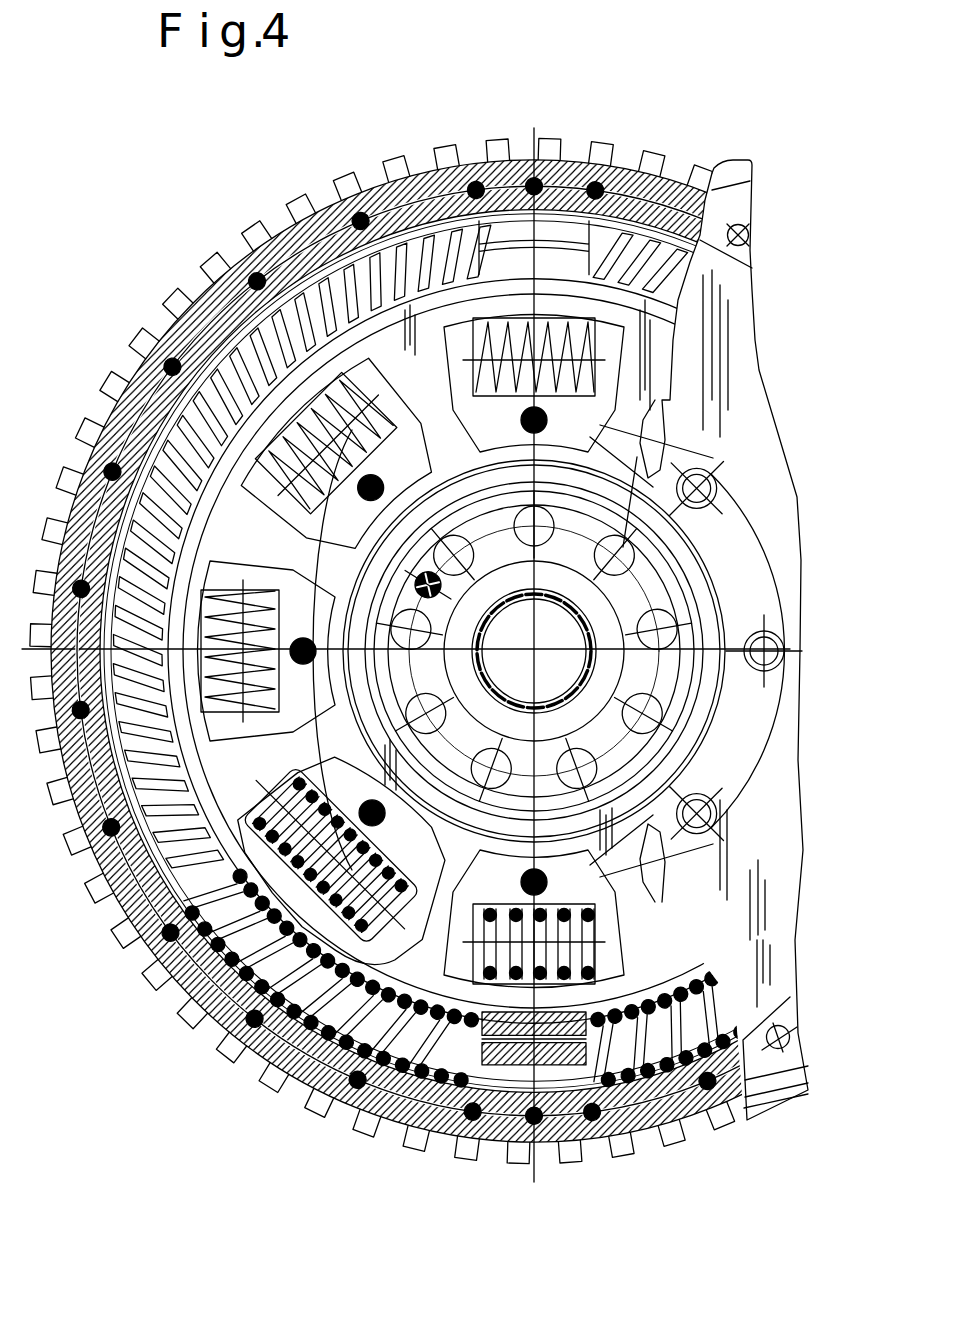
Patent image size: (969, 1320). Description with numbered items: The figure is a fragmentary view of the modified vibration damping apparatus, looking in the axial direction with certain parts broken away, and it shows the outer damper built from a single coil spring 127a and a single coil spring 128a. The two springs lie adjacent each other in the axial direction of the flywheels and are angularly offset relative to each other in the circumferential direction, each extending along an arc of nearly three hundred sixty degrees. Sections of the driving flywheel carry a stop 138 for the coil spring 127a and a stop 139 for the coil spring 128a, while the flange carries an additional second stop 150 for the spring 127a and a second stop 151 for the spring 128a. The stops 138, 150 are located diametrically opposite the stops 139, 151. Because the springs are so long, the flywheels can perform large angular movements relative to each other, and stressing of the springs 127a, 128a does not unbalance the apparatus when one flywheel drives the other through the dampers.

The coil spring 127a is at (277, 330).
The stop 138 is at (503, 222).
The stop 139 is at (575, 1140).
The second stop 150 is at (563, 247).
The second stop 151 is at (500, 1090).
The coil spring 128a is at (727, 968).